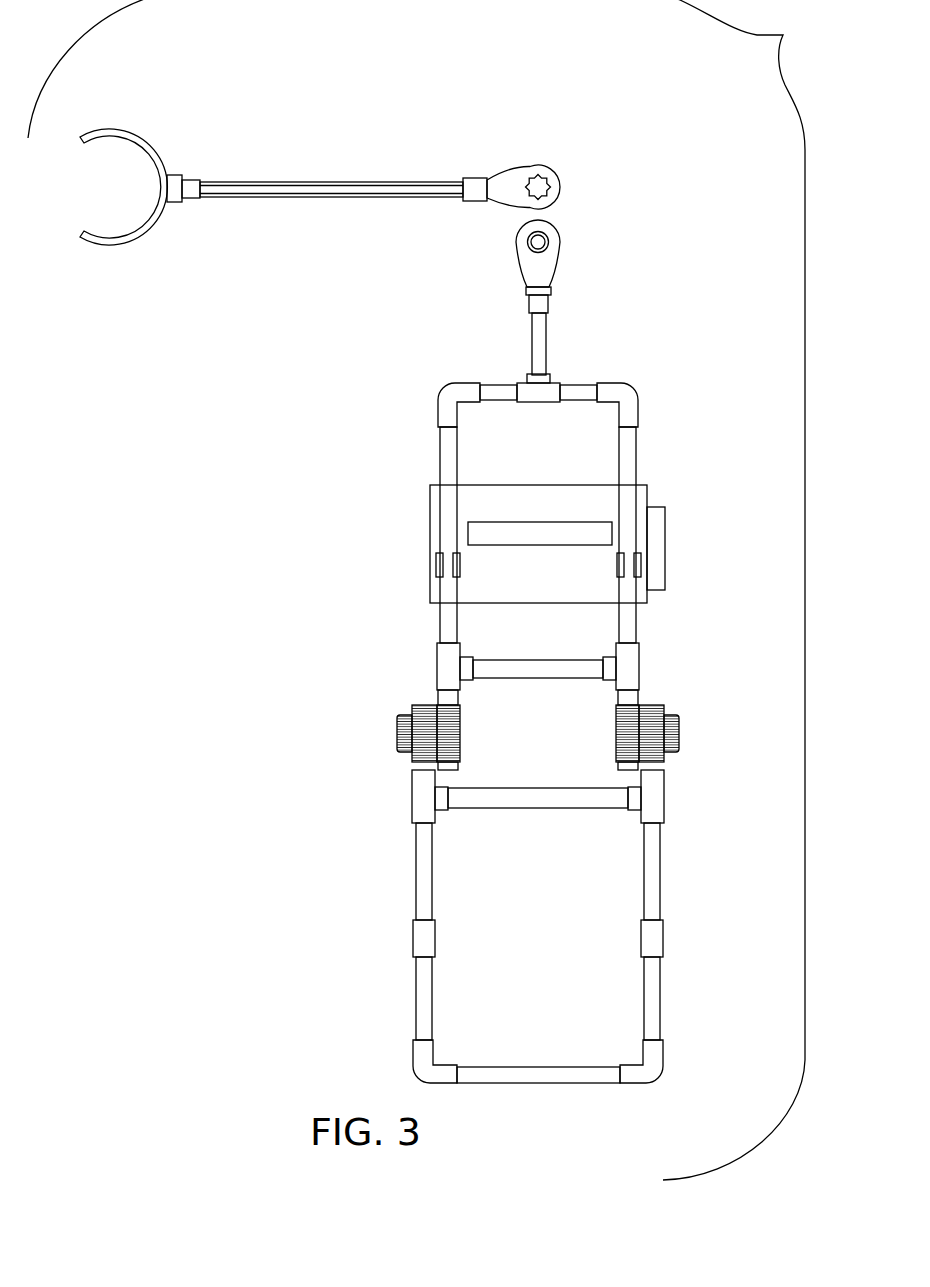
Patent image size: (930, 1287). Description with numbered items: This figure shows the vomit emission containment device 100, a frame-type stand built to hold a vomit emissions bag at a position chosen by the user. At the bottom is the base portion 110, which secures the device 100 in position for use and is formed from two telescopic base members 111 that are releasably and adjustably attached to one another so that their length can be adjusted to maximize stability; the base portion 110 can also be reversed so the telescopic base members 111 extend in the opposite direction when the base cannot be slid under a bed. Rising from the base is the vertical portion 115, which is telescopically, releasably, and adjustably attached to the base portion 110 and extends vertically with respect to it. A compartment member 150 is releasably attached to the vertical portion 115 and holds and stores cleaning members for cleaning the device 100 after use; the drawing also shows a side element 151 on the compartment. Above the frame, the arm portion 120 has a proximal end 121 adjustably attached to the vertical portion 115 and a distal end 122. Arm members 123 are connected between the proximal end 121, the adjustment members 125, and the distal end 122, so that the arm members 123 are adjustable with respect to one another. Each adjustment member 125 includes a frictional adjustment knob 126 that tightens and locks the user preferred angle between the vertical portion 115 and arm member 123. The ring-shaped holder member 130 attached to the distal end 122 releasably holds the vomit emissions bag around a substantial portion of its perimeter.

The vomit emission containment device 100 is at (423, 590).
The base portion 110 is at (465, 922).
The telescopic base members 111 is at (424, 882).
The vertical portion 115 is at (438, 457).
The arm portion 120 is at (335, 107).
The proximal end 121 is at (458, 181).
The distal end 122 is at (208, 182).
The arm member 123 is at (352, 182).
The adjustment member 125 is at (560, 185).
The frictional adjustment knob 126 is at (548, 178).
The holder member 130 is at (122, 248).
The compartment member 150 is at (430, 530).
The side attachment 151 is at (666, 543).